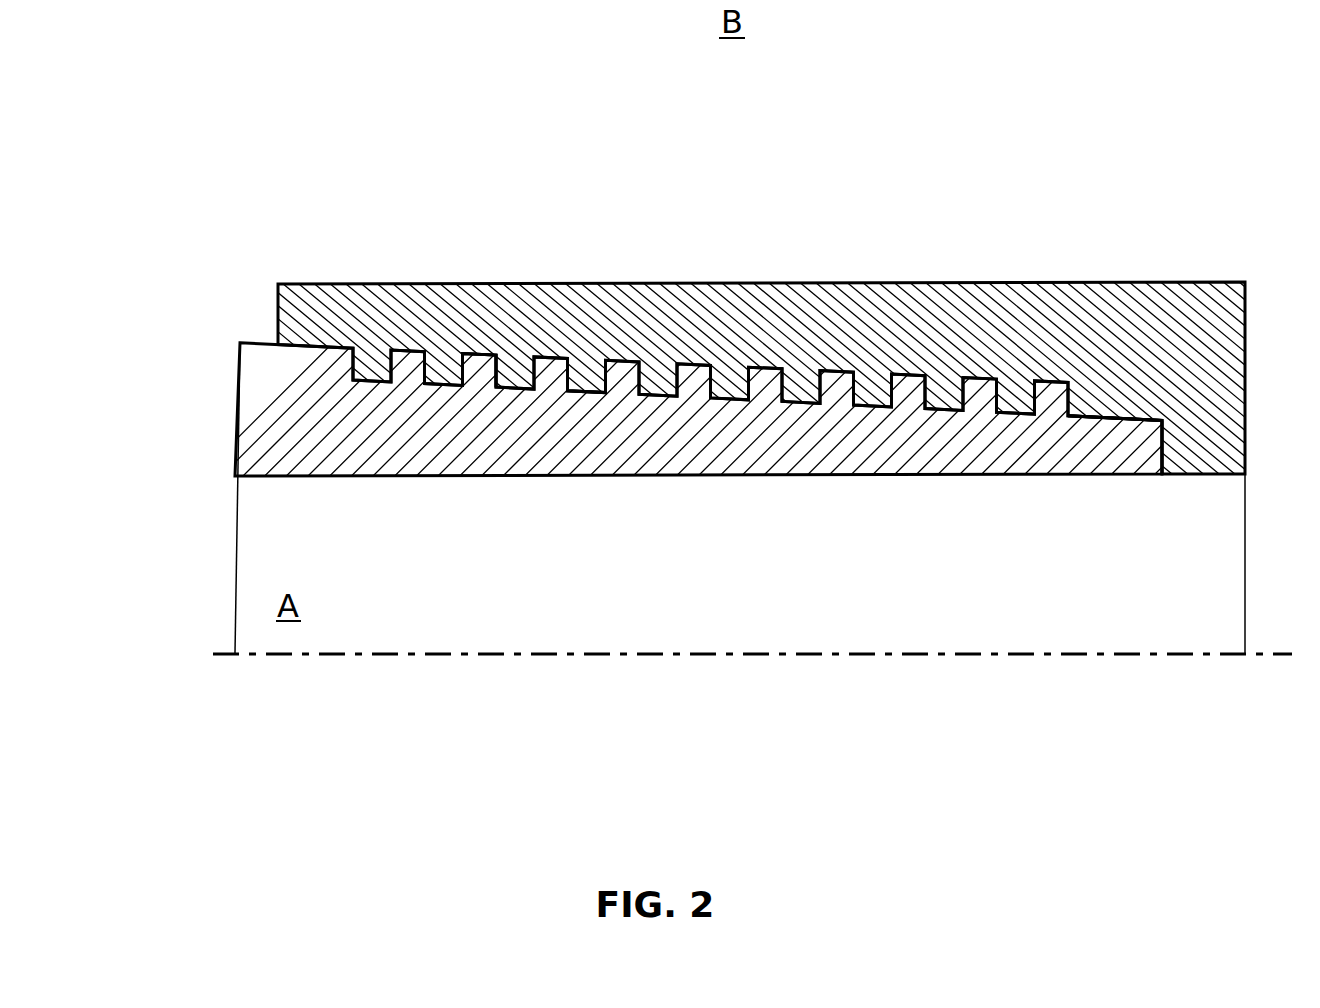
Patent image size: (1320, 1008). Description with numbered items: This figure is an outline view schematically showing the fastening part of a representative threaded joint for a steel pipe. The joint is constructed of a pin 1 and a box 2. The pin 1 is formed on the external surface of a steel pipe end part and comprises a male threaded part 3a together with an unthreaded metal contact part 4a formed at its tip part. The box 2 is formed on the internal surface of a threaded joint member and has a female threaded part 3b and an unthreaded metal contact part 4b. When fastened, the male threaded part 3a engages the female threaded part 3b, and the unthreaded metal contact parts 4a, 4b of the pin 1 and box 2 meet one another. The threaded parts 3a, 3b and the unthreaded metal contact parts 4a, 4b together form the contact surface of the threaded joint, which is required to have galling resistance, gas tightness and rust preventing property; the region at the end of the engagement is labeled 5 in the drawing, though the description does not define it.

The pin 1 is at (224, 413).
The box 2 is at (968, 222).
The male threaded part 3a is at (480, 354).
The female threaded part 3b is at (587, 393).
The unthreaded metal contact part 4a is at (1102, 413).
The unthreaded metal contact part 4b is at (1108, 418).
The joint / gap region at end 5 is at (1165, 450).